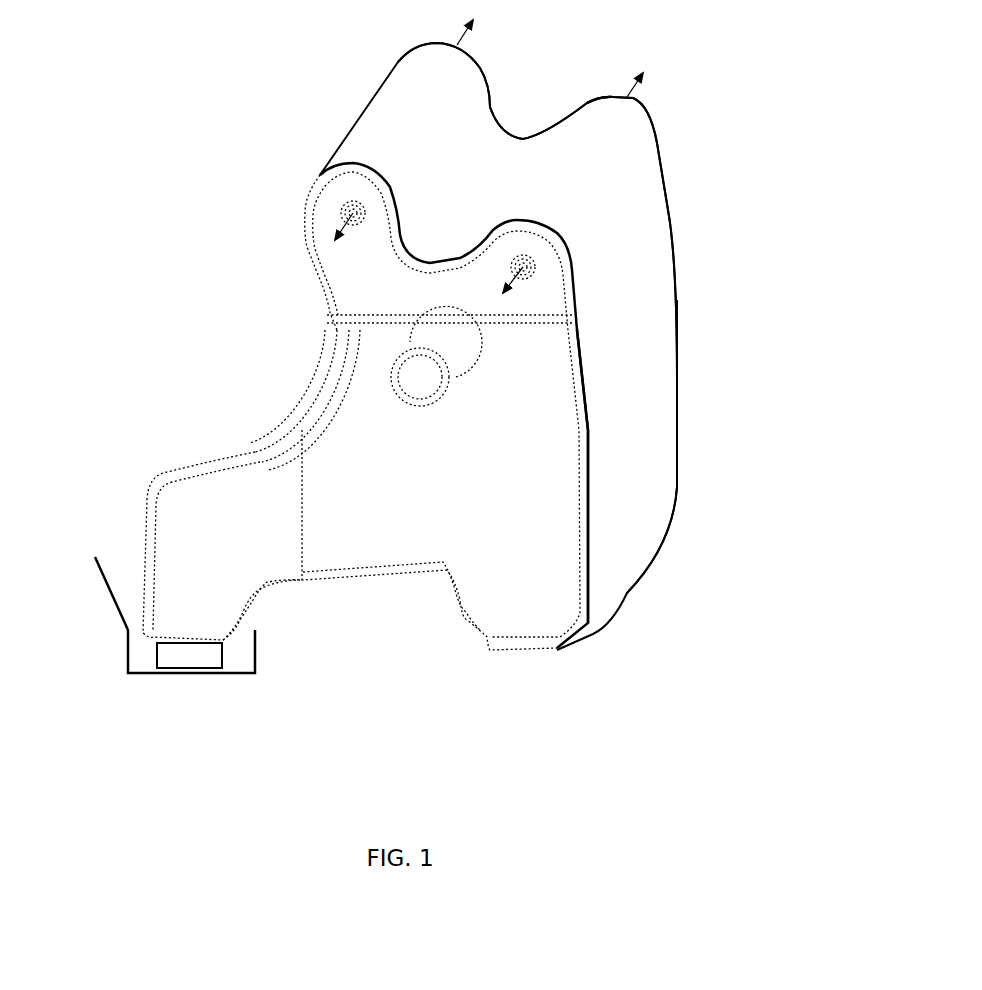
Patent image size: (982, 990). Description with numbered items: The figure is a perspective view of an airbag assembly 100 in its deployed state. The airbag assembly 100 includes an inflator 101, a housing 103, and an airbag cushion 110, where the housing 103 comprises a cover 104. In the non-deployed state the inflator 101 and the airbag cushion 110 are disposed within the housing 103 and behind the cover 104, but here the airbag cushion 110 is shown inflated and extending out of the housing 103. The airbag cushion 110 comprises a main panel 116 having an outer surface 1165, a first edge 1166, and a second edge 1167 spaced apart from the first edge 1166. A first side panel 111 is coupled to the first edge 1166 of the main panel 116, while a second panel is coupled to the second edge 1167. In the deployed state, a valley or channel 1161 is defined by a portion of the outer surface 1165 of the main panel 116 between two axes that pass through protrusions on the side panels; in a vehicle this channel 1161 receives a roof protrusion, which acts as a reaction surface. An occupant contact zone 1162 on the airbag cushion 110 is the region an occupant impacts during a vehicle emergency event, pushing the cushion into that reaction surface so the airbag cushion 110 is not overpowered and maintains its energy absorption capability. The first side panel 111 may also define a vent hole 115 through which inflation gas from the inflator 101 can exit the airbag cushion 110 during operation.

The airbag assembly 100 is at (277, 162).
The inflator 101 is at (188, 657).
The housing 103 is at (143, 677).
The cover 104 is at (105, 587).
The airbag cushion 110 is at (630, 607).
The first side panel 111 is at (367, 537).
The vent hole 115 is at (418, 377).
The main panel 116 is at (633, 505).
The channel 1161 is at (478, 185).
The occupant contact zone 1162 is at (632, 347).
The outer surface 1165 is at (607, 193).
The first edge 1166 is at (587, 430).
The second edge 1167 is at (675, 237).